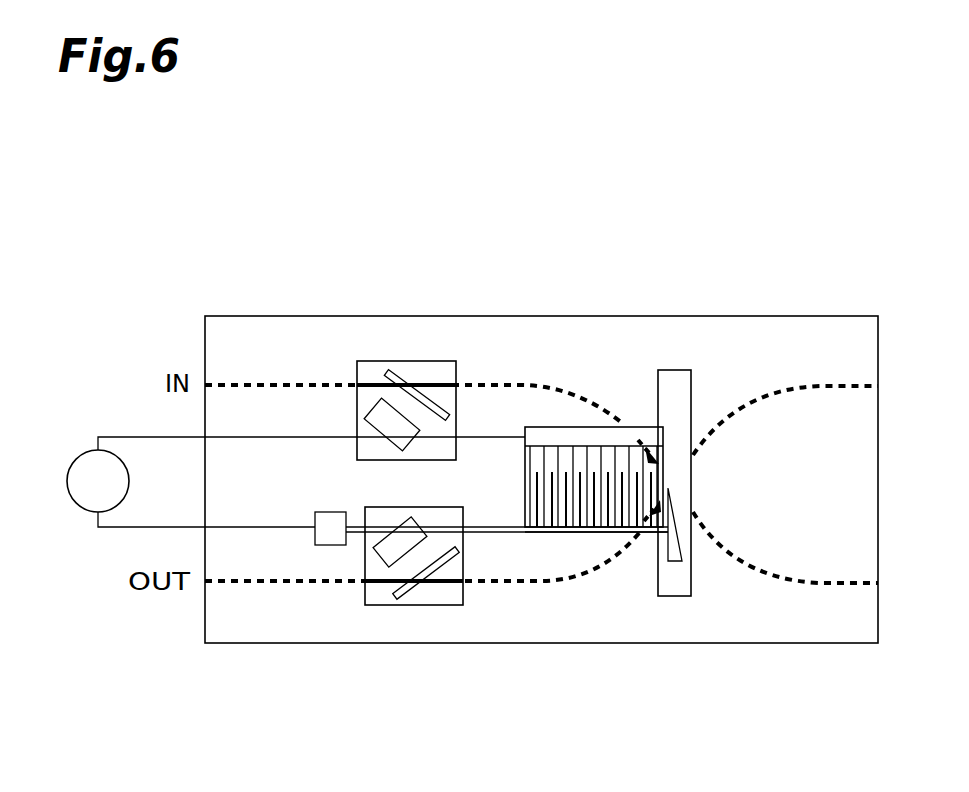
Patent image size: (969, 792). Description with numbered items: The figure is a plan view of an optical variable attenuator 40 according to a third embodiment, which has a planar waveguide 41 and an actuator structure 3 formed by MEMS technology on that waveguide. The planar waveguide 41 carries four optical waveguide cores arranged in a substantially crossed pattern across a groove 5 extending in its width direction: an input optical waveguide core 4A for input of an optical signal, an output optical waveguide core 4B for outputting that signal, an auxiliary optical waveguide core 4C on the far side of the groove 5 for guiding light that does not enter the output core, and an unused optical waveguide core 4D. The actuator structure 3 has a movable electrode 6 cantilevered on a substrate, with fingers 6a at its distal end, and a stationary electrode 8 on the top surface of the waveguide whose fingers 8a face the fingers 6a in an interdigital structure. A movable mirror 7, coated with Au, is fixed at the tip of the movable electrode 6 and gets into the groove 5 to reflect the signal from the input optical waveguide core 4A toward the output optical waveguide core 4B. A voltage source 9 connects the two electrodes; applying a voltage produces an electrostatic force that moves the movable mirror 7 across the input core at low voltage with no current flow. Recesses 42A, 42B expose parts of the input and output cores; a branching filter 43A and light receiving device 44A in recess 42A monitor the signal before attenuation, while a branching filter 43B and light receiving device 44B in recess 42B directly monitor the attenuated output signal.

The optical variable attenuator 40 is at (541, 378).
The planar waveguide 41 is at (782, 335).
The input optical waveguide core 4A is at (280, 382).
The output optical waveguide core 4B is at (242, 583).
The auxiliary optical waveguide core 4C is at (822, 583).
The unused optical waveguide core 4D is at (835, 385).
The recess 42A is at (405, 349).
The branching filter 43A is at (397, 373).
The light receiving device 44A is at (372, 397).
The recess 42B is at (386, 615).
The branching filter 43B is at (402, 595).
The light receiving device 44B is at (385, 555).
The voltage source 9 is at (66, 481).
The stationary electrode 8 is at (564, 402).
The fingers 8a is at (525, 468).
The fingers 6a is at (530, 510).
The movable electrode 6 is at (577, 530).
The actuator structure 3 is at (543, 541).
The groove 5 is at (674, 380).
The movable mirror 7 is at (677, 560).